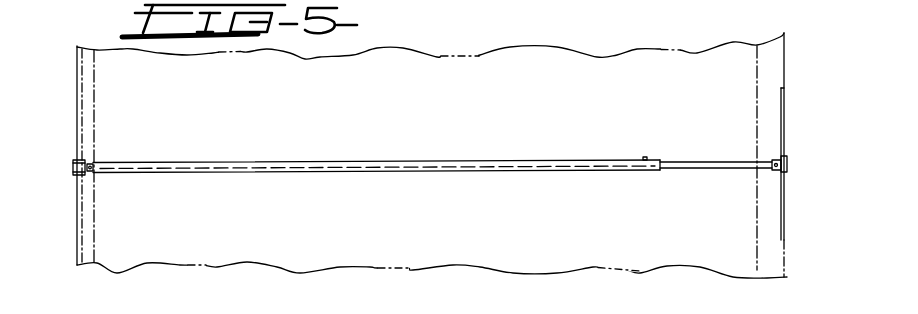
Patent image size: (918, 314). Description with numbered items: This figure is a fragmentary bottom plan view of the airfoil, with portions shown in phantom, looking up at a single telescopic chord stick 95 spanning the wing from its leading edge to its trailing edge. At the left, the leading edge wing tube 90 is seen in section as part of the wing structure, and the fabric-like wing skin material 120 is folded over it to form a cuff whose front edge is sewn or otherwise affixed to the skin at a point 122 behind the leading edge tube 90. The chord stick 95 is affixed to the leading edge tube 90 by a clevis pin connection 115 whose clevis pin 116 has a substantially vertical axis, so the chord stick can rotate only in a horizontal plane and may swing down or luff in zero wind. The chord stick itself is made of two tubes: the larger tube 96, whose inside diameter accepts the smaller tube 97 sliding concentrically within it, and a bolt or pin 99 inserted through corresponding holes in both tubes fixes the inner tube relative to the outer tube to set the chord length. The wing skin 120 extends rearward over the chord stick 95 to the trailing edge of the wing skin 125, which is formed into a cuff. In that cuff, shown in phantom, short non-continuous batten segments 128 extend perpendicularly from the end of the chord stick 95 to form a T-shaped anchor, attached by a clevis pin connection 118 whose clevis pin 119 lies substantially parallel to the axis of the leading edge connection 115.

The leading edge wing tube 90 is at (77, 97).
The chord stick 95 is at (432, 180).
The larger chord stick tube 96 is at (345, 161).
The smaller chord stick tube 97 is at (707, 171).
The bolt or pin 99 is at (645, 172).
The clevis pin connection 115 is at (97, 156).
The clevis pin 116 is at (88, 175).
The clevis pin connection 118 is at (776, 172).
The clevis pin 119 is at (776, 160).
The wing skin material 120 is at (366, 241).
The skin attachment point 122 is at (96, 86).
The trailing edge of the wing skin 125 is at (815, 30).
The batten segments 128 is at (816, 96).